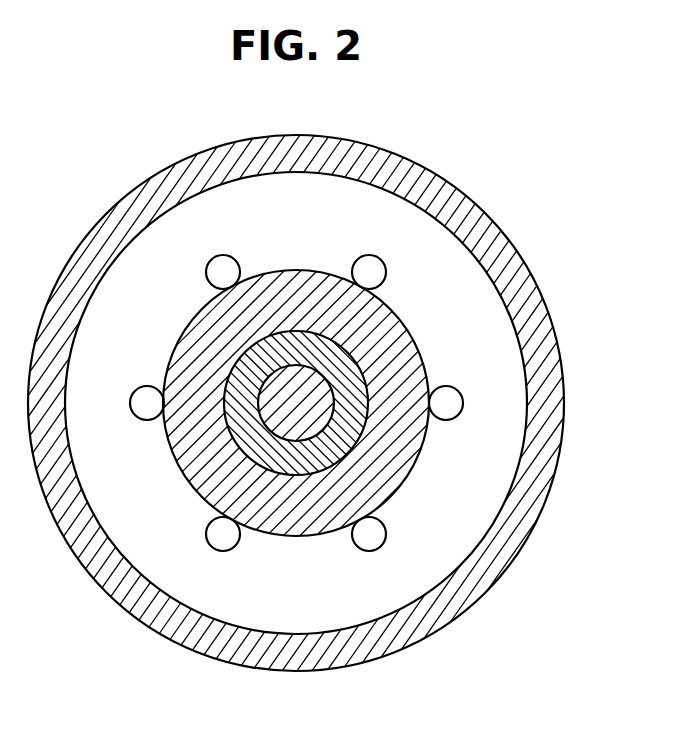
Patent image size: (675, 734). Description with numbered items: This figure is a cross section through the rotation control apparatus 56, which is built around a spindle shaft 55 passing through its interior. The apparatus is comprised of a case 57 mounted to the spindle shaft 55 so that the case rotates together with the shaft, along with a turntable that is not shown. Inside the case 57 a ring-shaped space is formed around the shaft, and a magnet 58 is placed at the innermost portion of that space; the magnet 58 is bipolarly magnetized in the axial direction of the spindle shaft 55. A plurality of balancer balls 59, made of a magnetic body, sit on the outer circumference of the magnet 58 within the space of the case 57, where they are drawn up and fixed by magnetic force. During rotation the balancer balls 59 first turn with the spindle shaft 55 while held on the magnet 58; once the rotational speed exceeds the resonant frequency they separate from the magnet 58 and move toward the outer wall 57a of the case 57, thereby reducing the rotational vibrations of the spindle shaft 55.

The spindle shaft 55 is at (297, 377).
The rotation control apparatus 56 is at (322, 417).
The case 57 is at (538, 482).
The outer wall of case 57a is at (336, 633).
The magnet 58 is at (390, 457).
The balancer balls 59 is at (147, 386).